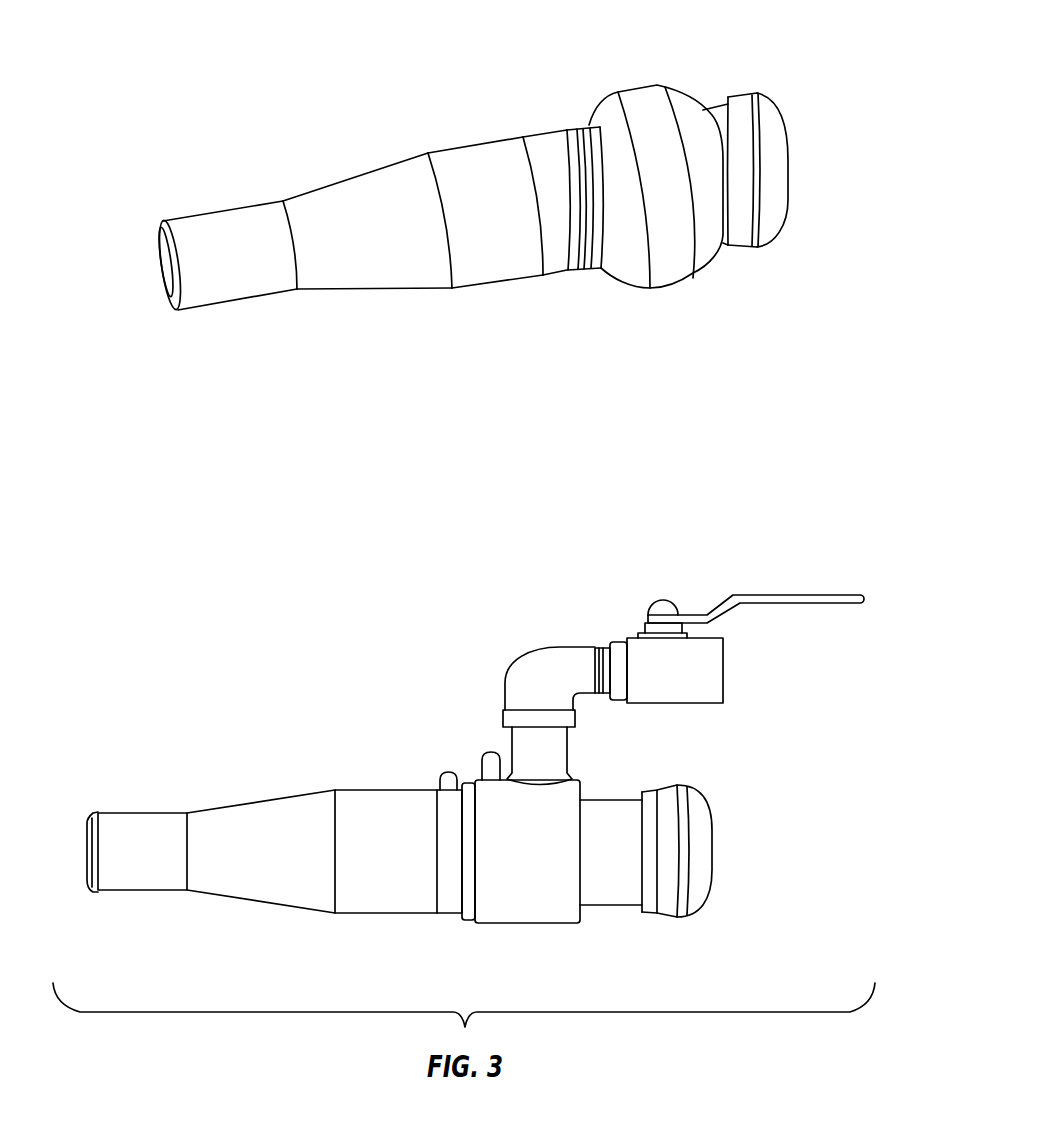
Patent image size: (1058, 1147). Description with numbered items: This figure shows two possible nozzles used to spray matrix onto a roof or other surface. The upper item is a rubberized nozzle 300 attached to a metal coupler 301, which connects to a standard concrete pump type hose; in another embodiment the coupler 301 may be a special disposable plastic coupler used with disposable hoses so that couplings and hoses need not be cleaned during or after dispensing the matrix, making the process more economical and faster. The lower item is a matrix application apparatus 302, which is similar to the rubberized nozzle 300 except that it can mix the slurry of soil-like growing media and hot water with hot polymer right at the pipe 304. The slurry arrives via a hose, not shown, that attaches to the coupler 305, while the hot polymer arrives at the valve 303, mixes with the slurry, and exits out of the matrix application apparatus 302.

The rubberized nozzle 300 is at (163, 223).
The metal coupler 301 is at (753, 92).
The matrix application apparatus 302 is at (90, 818).
The valve 303 is at (663, 628).
The pipe 304 is at (525, 662).
The coupler 305 is at (713, 857).